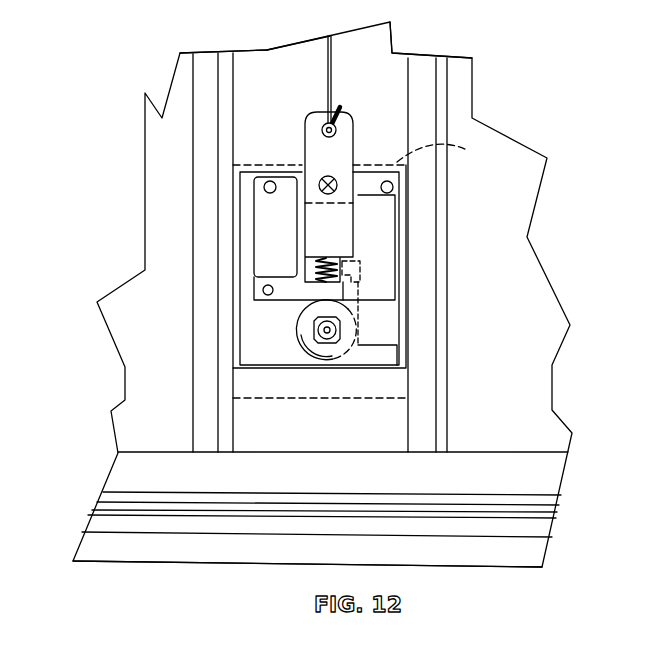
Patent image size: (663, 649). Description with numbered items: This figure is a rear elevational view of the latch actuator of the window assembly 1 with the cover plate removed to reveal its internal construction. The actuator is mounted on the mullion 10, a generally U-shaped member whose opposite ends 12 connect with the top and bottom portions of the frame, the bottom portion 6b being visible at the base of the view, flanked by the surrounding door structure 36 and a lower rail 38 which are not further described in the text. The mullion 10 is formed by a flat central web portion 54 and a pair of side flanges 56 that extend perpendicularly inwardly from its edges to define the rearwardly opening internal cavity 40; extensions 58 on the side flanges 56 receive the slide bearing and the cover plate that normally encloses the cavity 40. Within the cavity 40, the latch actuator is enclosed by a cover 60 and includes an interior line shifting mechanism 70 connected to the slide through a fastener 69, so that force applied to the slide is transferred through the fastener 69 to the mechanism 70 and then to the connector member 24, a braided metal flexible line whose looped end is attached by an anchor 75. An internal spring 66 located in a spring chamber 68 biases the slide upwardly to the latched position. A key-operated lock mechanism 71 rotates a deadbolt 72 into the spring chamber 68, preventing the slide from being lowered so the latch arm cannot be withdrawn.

The window assembly 1 is at (94, 573).
The mullion 10 is at (205, 62).
The opposite ends 12 is at (447, 448).
The connector member 24 is at (323, 62).
The side panel 36 is at (157, 163).
The bottom rail 38 is at (128, 490).
The internal cavity 40 is at (382, 43).
The web portion 54 is at (297, 53).
The side flanges 56 is at (450, 255).
The extensions 58 is at (200, 382).
The cover 60 is at (362, 271).
The internal spring 66 is at (313, 258).
The spring chamber 68 is at (313, 270).
The fastener 69 is at (337, 183).
The interior line shifting mechanism 70 is at (355, 142).
The lock mechanism 71 is at (313, 324).
The deadbolt 72 is at (395, 345).
The anchors 75 is at (320, 133).
The bottom portion 6b is at (488, 555).